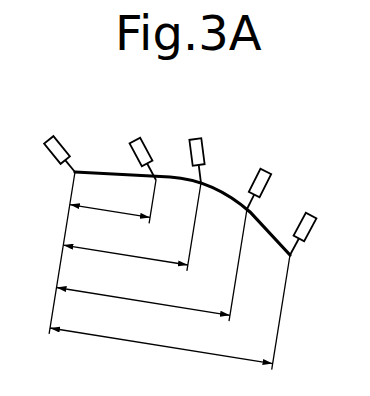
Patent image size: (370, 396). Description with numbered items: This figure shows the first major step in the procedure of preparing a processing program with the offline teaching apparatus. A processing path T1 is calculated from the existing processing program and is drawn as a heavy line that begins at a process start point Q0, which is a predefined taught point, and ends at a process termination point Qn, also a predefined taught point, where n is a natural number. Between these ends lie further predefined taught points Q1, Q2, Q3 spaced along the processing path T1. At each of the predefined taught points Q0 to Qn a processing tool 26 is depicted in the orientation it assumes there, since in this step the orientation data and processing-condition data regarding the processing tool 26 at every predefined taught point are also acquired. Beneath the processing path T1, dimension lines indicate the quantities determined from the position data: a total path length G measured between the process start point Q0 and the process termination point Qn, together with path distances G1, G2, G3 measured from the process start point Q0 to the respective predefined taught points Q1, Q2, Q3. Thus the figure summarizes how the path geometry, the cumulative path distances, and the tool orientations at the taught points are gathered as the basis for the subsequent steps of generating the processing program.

The processing path T1 is at (107, 170).
The processing tool 26 is at (145, 139).
The process start point Q0 is at (75, 172).
The predefined taught point Q1 is at (160, 180).
The predefined taught point Q2 is at (204, 187).
The predefined taught point Q3 is at (246, 213).
The process termination point Qn is at (291, 257).
The path distance G1 is at (110, 202).
The path distance G2 is at (125, 248).
The path distance G3 is at (144, 294).
The total path length G is at (161, 344).